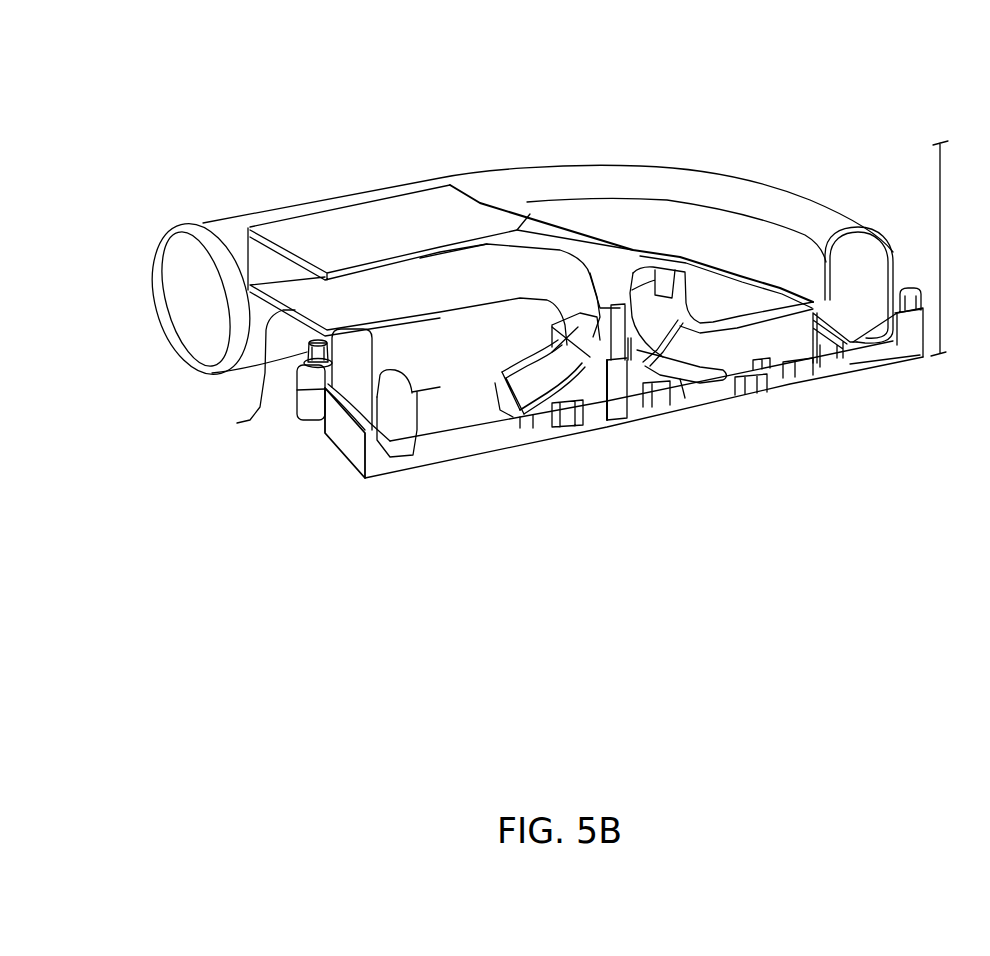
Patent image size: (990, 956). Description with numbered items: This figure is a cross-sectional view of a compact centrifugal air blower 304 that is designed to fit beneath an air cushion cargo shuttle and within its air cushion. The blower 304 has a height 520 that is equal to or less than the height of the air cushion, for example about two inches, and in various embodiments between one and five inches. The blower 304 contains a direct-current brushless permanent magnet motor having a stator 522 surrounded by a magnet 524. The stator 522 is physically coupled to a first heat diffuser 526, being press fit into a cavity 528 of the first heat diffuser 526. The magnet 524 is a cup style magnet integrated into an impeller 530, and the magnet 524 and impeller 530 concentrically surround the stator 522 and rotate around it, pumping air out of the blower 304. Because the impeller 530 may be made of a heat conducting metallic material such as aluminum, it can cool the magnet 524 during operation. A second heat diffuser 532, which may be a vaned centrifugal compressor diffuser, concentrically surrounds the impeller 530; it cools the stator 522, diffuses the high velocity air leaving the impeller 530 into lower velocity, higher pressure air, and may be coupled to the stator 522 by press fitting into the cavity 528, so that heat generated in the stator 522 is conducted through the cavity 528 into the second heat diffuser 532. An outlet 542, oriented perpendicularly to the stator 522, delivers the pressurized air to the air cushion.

The centrifugal air blower 304 is at (631, 112).
The height 520 is at (938, 210).
The outlet 542 is at (190, 363).
The second heat diffuser 532 is at (433, 468).
The impeller 530 is at (533, 430).
The stator 522 is at (580, 432).
The first heat diffuser 526 is at (610, 425).
The cavity 528 is at (663, 403).
The magnet 524 is at (660, 400).